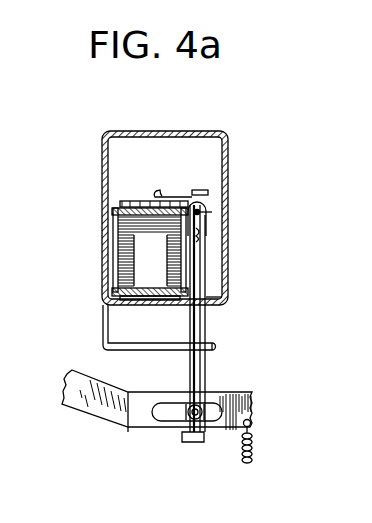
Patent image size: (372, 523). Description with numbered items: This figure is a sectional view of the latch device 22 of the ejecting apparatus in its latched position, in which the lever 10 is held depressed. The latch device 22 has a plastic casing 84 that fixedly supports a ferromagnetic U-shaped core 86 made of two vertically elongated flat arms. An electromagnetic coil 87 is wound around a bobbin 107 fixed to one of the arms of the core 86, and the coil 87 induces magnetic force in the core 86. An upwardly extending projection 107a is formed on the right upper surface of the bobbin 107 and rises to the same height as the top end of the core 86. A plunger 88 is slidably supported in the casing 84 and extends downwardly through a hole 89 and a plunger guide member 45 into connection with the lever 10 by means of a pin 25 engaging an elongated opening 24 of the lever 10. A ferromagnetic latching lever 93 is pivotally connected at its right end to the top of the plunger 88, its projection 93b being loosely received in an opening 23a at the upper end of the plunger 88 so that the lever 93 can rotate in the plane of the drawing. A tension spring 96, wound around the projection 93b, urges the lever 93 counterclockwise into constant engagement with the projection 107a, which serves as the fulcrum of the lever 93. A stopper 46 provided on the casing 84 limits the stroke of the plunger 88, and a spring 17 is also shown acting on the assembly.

The lever 10 is at (101, 400).
The spring 17 is at (254, 448).
The latch device 22 is at (106, 131).
The opening 23a is at (206, 214).
The elongated opening 24 is at (170, 418).
The pin 25 is at (220, 412).
The plunger guide member 45 is at (163, 351).
The stopper 46 is at (209, 193).
The plastic casing 84 is at (228, 141).
The U-shaped core 86 is at (117, 211).
The electromagnetic coil 87 is at (120, 253).
The plunger 88 is at (207, 368).
The hole 89 is at (226, 304).
The ferromagnetic latching lever 93 is at (122, 201).
The projection 93b is at (206, 209).
The tension spring 96 is at (170, 199).
The bobbin 107 is at (120, 236).
The projection 107a is at (202, 236).